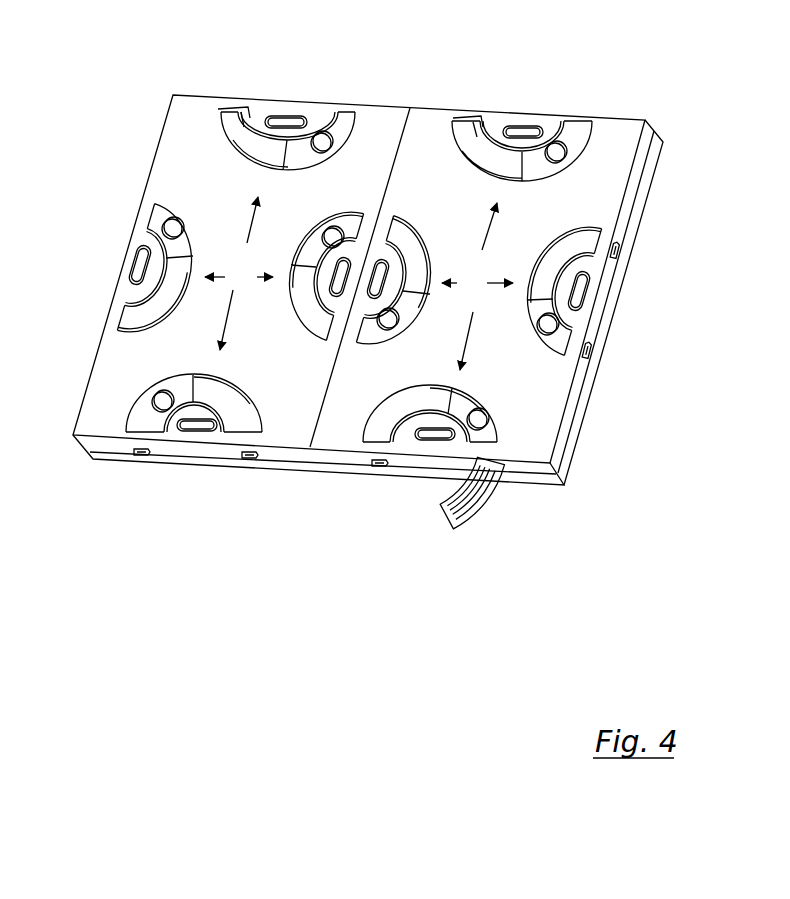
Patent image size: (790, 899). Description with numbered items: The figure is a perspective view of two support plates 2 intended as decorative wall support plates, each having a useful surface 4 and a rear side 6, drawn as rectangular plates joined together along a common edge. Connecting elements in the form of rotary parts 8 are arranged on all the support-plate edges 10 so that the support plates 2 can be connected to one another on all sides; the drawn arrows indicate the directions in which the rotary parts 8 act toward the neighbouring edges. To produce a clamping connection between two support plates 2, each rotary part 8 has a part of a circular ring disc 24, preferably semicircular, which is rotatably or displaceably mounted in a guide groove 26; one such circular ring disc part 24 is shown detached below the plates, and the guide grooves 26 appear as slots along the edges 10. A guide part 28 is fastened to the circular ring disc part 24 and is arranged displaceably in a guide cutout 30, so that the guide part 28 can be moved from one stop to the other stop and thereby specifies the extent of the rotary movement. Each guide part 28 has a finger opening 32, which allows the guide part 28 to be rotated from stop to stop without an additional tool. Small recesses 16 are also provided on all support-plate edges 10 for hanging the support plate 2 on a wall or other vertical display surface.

The support plate 2 is at (152, 90).
The useful surface 4 is at (97, 461).
The rear side 6 is at (386, 277).
The connecting element / rotary part 8 is at (359, 283).
The support-plate edge 10 is at (320, 102).
The small recess 16 is at (137, 262).
The circular ring disc part 24 is at (478, 483).
The guide groove 26 is at (143, 462).
The guide part 28 is at (337, 120).
The guide cutout 30 is at (247, 128).
The finger opening 32 is at (148, 395).